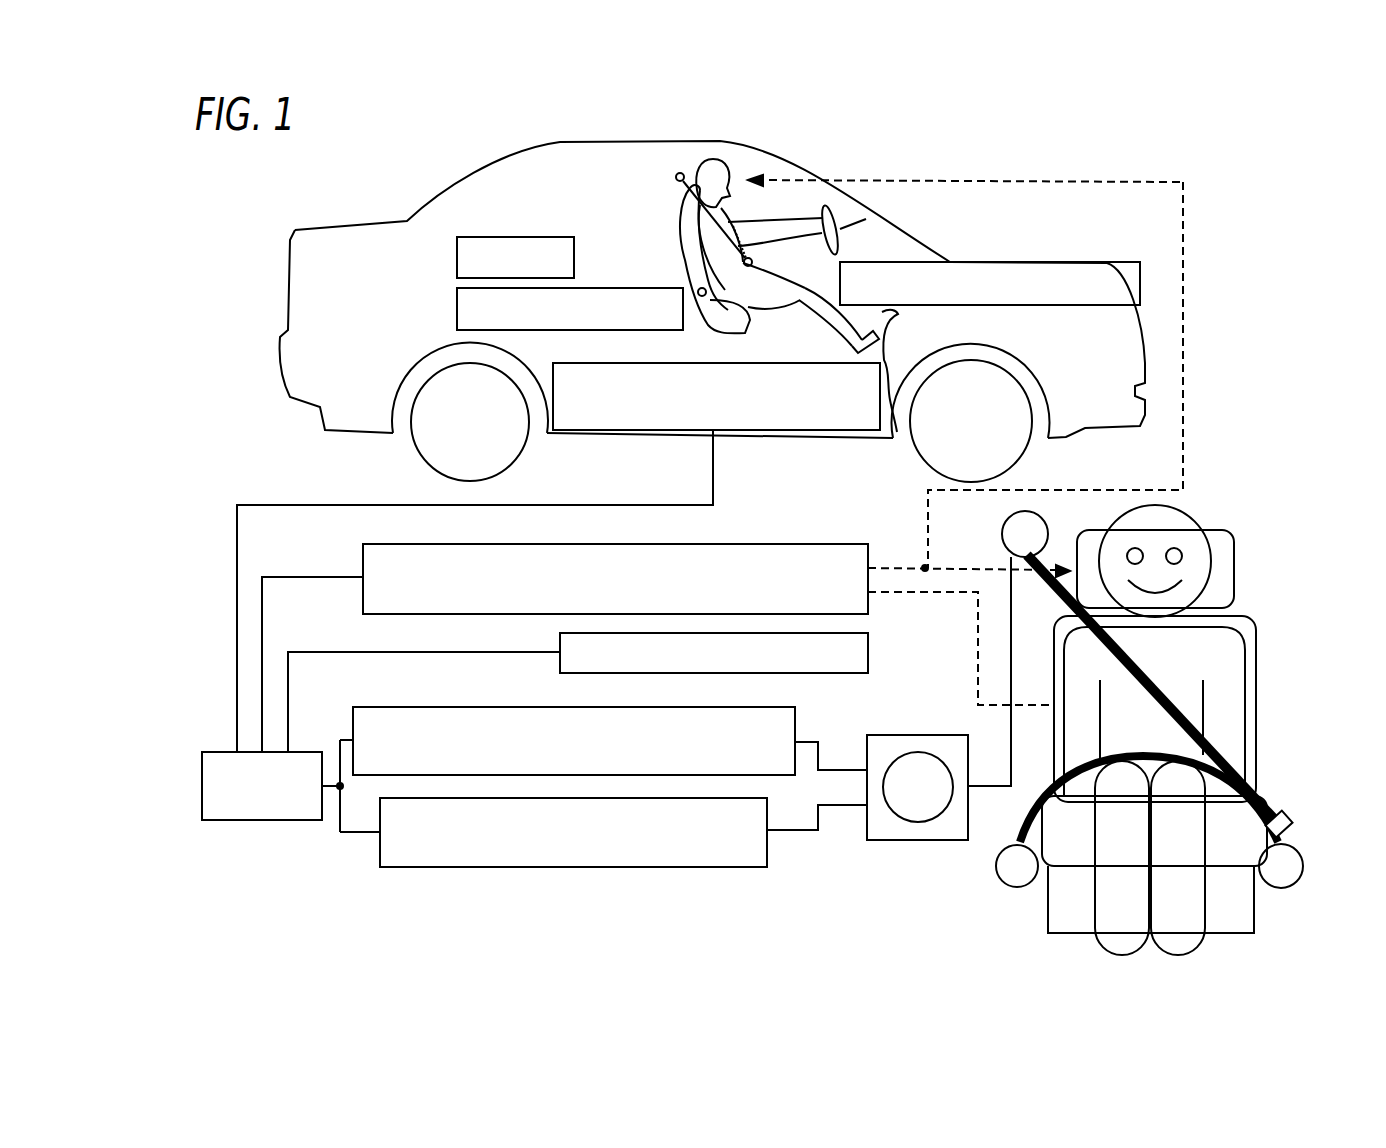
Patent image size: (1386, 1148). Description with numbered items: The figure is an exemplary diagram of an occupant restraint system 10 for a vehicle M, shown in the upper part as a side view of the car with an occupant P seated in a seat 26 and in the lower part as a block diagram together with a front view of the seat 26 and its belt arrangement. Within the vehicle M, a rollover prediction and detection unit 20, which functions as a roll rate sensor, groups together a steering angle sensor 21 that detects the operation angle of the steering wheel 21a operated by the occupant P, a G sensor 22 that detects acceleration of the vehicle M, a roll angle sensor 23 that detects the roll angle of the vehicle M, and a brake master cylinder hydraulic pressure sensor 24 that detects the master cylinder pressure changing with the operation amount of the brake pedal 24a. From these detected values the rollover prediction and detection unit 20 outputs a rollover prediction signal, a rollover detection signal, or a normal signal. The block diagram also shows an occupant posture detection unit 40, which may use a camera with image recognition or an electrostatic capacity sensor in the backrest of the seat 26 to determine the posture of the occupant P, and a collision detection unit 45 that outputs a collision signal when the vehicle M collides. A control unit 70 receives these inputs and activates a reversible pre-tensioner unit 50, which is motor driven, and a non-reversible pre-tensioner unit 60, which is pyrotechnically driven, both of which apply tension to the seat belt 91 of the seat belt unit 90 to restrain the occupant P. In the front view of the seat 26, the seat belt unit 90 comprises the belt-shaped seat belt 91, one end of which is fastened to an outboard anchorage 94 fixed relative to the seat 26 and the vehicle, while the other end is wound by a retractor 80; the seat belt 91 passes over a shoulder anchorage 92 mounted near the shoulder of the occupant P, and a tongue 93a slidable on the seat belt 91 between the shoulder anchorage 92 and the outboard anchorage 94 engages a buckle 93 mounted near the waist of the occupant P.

The occupant restraint system 10 is at (1228, 240).
The rollover prediction and detection unit 20 is at (943, 262).
The steering angle sensor 21 is at (1020, 306).
The steering wheel 21a is at (868, 218).
The G sensor 22 is at (457, 254).
The roll angle sensor 23 is at (457, 305).
The brake master cylinder hydraulic pressure sensor 24 is at (800, 432).
The brake pedal 24a is at (898, 313).
The seat 26 is at (756, 331).
The occupant posture detection unit 40 is at (835, 544).
The collision detection unit 45 is at (868, 652).
The reversible pre-tensioner unit 50 is at (767, 856).
The non-reversible pre-tensioner unit 60 is at (795, 718).
The control unit 70 is at (260, 822).
The retractor 80 is at (918, 841).
The seat belt unit 90 is at (1240, 742).
The seat belt 91 is at (1160, 690).
The shoulder anchorage 92 is at (1002, 534).
The buckle 93 is at (1302, 855).
The tongue 93a is at (1292, 820).
The outboard anchorage 94 is at (1008, 886).
The occupant P is at (727, 167).
The vehicle M is at (1155, 314).